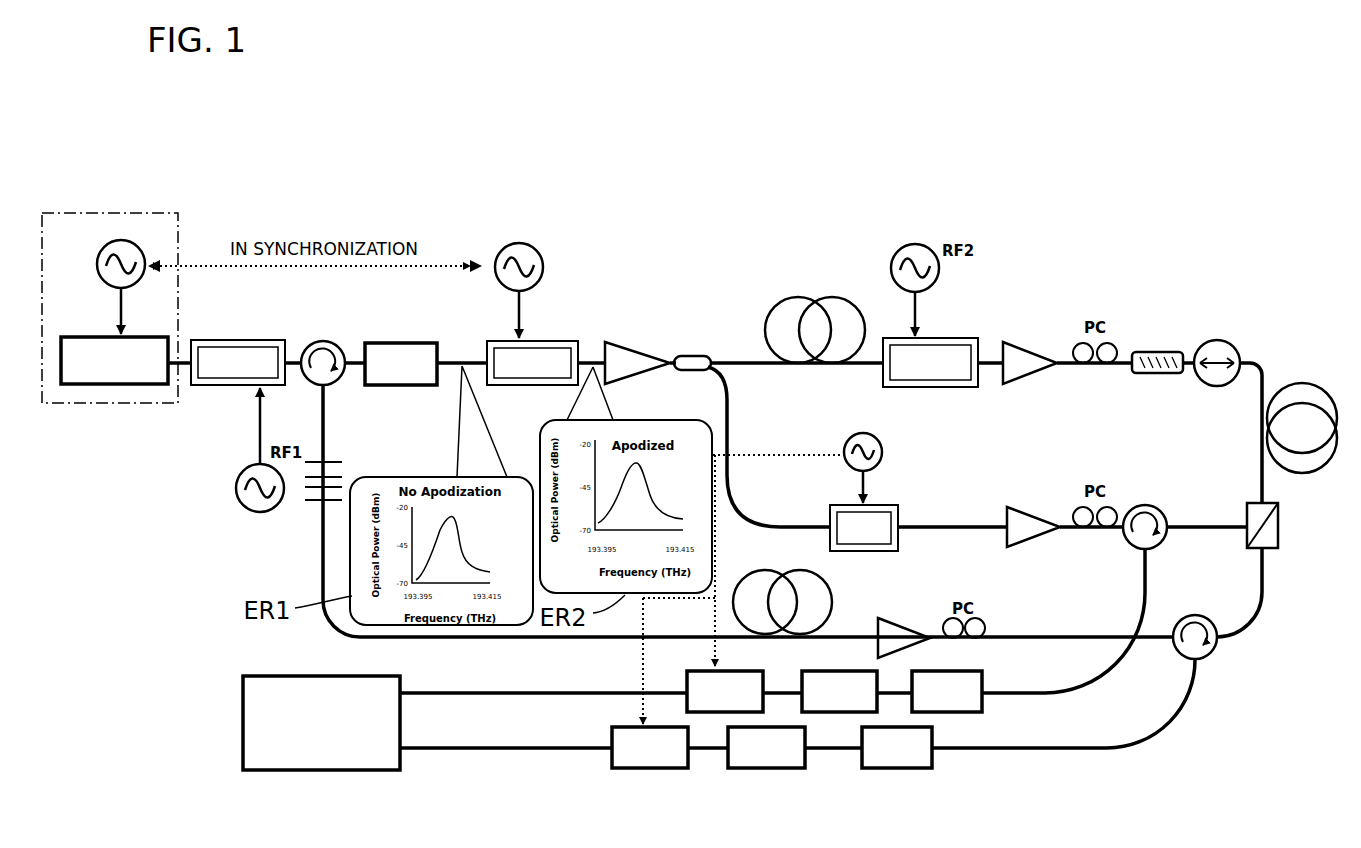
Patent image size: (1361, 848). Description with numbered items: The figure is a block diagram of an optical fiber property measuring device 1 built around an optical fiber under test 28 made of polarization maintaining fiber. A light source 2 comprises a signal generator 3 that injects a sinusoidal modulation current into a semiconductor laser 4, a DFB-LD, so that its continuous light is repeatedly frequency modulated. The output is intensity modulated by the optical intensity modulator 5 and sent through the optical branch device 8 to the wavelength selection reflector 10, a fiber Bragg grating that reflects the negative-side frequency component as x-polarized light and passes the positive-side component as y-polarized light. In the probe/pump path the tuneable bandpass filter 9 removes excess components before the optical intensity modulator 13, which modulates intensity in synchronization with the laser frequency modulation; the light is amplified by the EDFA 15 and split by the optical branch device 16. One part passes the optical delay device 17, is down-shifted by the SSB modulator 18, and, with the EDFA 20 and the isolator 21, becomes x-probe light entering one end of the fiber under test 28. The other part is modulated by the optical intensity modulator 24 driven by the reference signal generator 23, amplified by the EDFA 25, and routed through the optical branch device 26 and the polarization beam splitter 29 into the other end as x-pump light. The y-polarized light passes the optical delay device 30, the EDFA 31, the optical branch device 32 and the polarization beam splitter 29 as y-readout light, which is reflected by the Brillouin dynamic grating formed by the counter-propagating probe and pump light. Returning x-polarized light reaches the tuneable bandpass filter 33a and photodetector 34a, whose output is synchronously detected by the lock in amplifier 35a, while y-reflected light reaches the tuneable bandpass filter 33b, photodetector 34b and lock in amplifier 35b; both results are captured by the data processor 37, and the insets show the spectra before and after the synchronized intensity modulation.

The optical fiber property measuring device 1 is at (1118, 223).
The light source 2 is at (82, 212).
The signal generator 3 is at (140, 241).
The semiconductor laser 4 is at (95, 386).
The optical intensity modulator (IM1) 5 is at (235, 340).
The optical branch device 8 is at (330, 343).
The tuneable bandpass filter (TBF) 9 is at (405, 343).
The wavelength selection reflector 10 is at (335, 460).
The optical intensity modulator (IM2) 13 is at (555, 341).
The erbium-doped optical fiber amplifier (EDFA) 15 is at (645, 352).
The optical branch device 16 is at (698, 371).
The optical delay device 17 is at (815, 298).
The single-sideband modulator (SSBM) 18 is at (965, 338).
The EDFA 20 is at (1035, 383).
The isolator 21 is at (1152, 351).
The reference signal generator 23 is at (880, 441).
The optical intensity modulator (IM3) 24 is at (897, 505).
The EDFA 25 is at (1040, 542).
The optical branch device 26 is at (1162, 545).
The optical fiber under test 28 is at (1305, 393).
The polarization beam splitter (PBS) 29 is at (1280, 509).
The optical delay device 30 is at (781, 575).
The EDFA 31 is at (918, 628).
The optical branch device 32 is at (1205, 658).
The tuneable bandpass filter (TBF) 33a is at (975, 712).
The tuneable bandpass filter (TBF) 33b is at (903, 768).
The photodetector (PD1) 34a is at (832, 712).
The photodetector (PD2) 34b is at (748, 768).
The lock in amplifier 35a is at (690, 676).
The lock in amplifier 35b is at (652, 769).
The data processor 37 is at (325, 771).